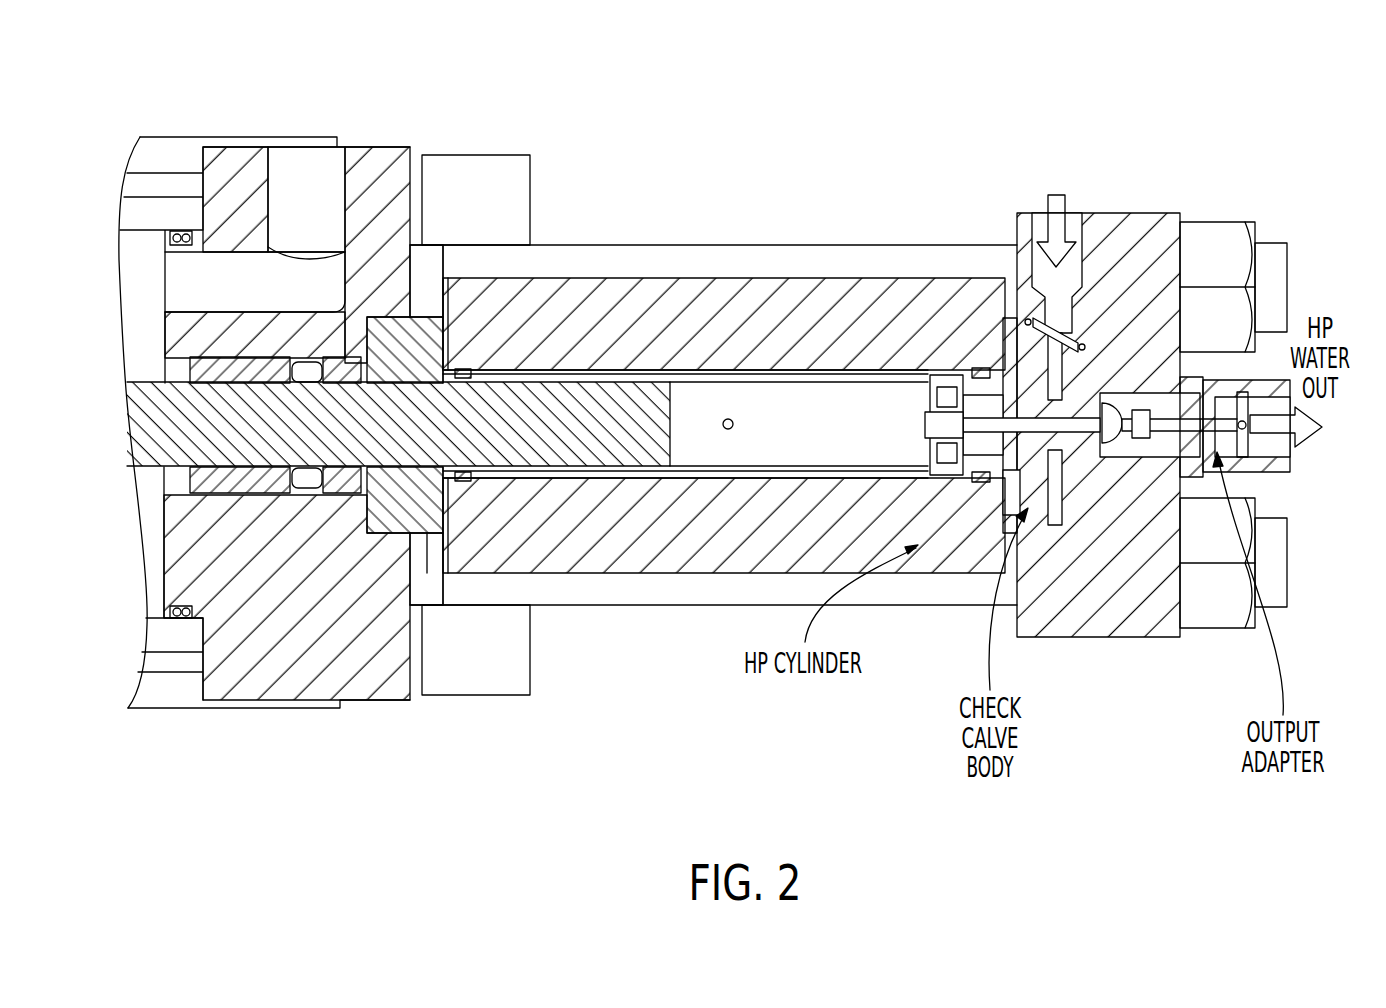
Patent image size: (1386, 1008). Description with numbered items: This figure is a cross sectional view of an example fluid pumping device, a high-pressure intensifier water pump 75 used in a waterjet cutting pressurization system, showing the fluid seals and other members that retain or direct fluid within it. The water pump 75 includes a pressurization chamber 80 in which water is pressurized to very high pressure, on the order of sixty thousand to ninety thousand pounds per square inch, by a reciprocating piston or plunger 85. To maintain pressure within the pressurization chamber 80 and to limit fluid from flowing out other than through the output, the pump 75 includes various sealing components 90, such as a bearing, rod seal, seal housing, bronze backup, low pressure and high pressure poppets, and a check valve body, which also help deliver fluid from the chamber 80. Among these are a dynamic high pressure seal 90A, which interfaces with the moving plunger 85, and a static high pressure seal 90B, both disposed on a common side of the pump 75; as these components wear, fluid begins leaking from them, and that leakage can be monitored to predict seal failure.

The water pump 75 is at (1198, 117).
The pressurization chamber 80 is at (818, 423).
The reciprocating piston 85 is at (512, 438).
The sealing components 90 is at (1137, 715).
The dynamic high pressure seal 90A is at (447, 478).
The static high pressure seal 90B is at (987, 478).